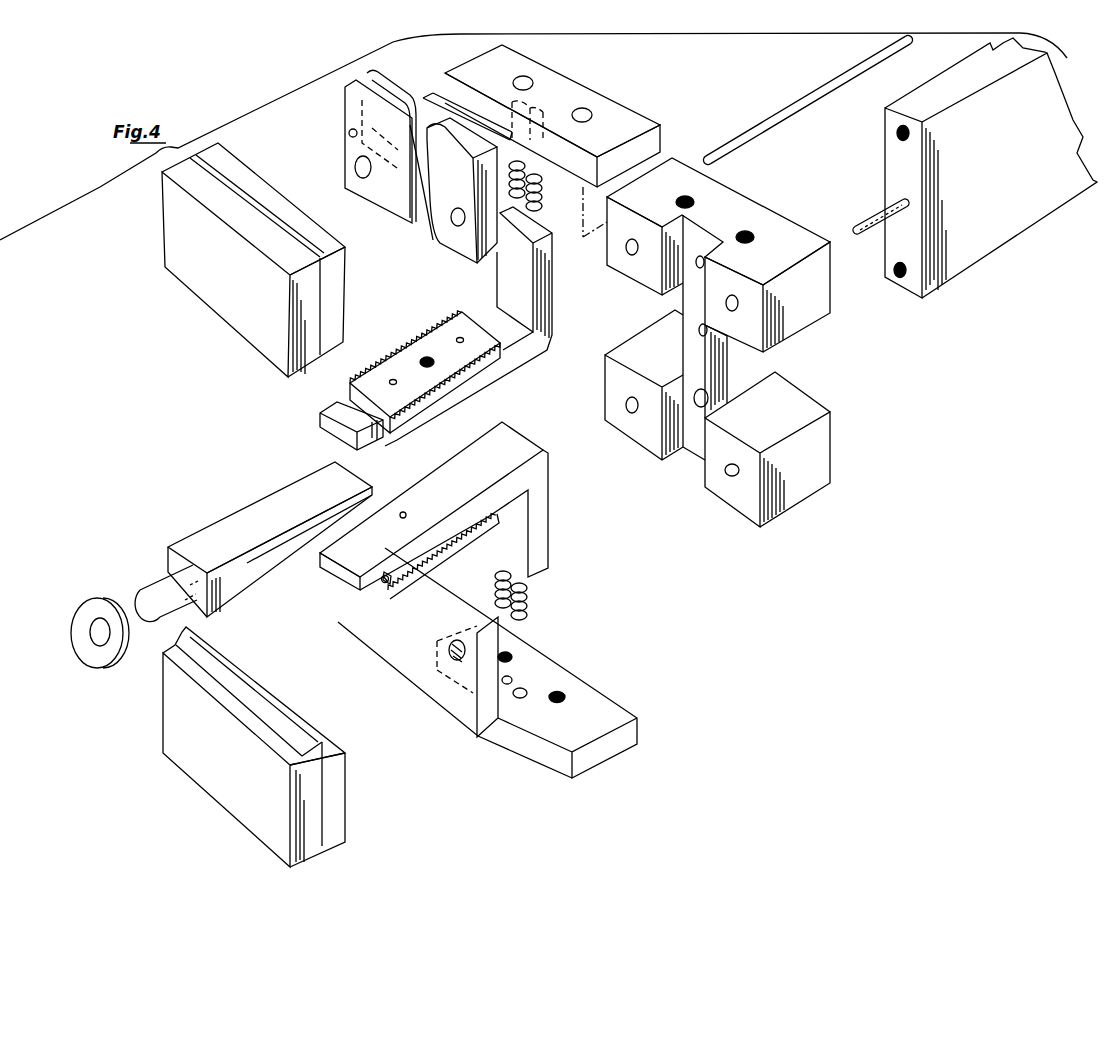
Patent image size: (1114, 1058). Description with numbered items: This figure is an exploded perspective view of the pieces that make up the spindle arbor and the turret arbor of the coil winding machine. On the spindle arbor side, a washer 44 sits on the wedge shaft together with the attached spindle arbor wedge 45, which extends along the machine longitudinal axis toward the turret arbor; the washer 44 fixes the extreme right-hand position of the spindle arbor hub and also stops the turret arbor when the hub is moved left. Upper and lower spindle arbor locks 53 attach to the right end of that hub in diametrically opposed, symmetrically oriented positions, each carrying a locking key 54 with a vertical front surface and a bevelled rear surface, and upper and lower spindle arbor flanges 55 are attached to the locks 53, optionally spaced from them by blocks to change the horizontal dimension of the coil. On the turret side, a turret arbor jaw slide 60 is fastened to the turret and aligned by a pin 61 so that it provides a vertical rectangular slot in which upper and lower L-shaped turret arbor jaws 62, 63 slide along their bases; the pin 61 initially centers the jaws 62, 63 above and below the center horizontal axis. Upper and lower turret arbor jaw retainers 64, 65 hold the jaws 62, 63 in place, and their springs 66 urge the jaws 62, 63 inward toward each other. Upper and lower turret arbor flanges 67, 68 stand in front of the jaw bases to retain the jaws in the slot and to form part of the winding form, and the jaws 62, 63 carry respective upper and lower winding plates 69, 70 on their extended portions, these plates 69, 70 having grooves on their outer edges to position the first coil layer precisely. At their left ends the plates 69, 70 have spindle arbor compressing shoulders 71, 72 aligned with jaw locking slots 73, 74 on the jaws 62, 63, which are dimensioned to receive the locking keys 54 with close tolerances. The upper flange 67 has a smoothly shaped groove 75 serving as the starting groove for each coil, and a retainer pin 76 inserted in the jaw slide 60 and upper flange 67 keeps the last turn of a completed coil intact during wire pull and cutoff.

The washer 44 is at (95, 597).
The spindle arbor wedge 45 is at (252, 522).
The spindle arbor locks 53 is at (256, 325).
The locking keys 54 is at (321, 386).
The spindle arbor flanges 55 is at (348, 290).
The turret arbor jaw slide 60 is at (830, 444).
The pin 61 is at (873, 217).
The upper turret arbor jaw 62 is at (520, 362).
The lower turret arbor jaw 63 is at (549, 528).
The upper turret arbor jaw retainer 64 is at (640, 107).
The lower turret arbor jaw retainer 65 is at (603, 753).
The springs 66 is at (541, 197).
The upper turret arbor flange 67 is at (347, 137).
The lower turret arbor flange 68 is at (460, 704).
The upper winding plate 69 is at (433, 335).
The lower winding plate 70 is at (470, 536).
The spindle arbor compressing shoulder 71 is at (386, 439).
The spindle arbor compressing shoulder 72 is at (385, 583).
The jaw locking slot 73 is at (355, 424).
The jaw locking slot 74 is at (386, 574).
The groove 75 is at (402, 205).
The retainer pin 76 is at (785, 112).